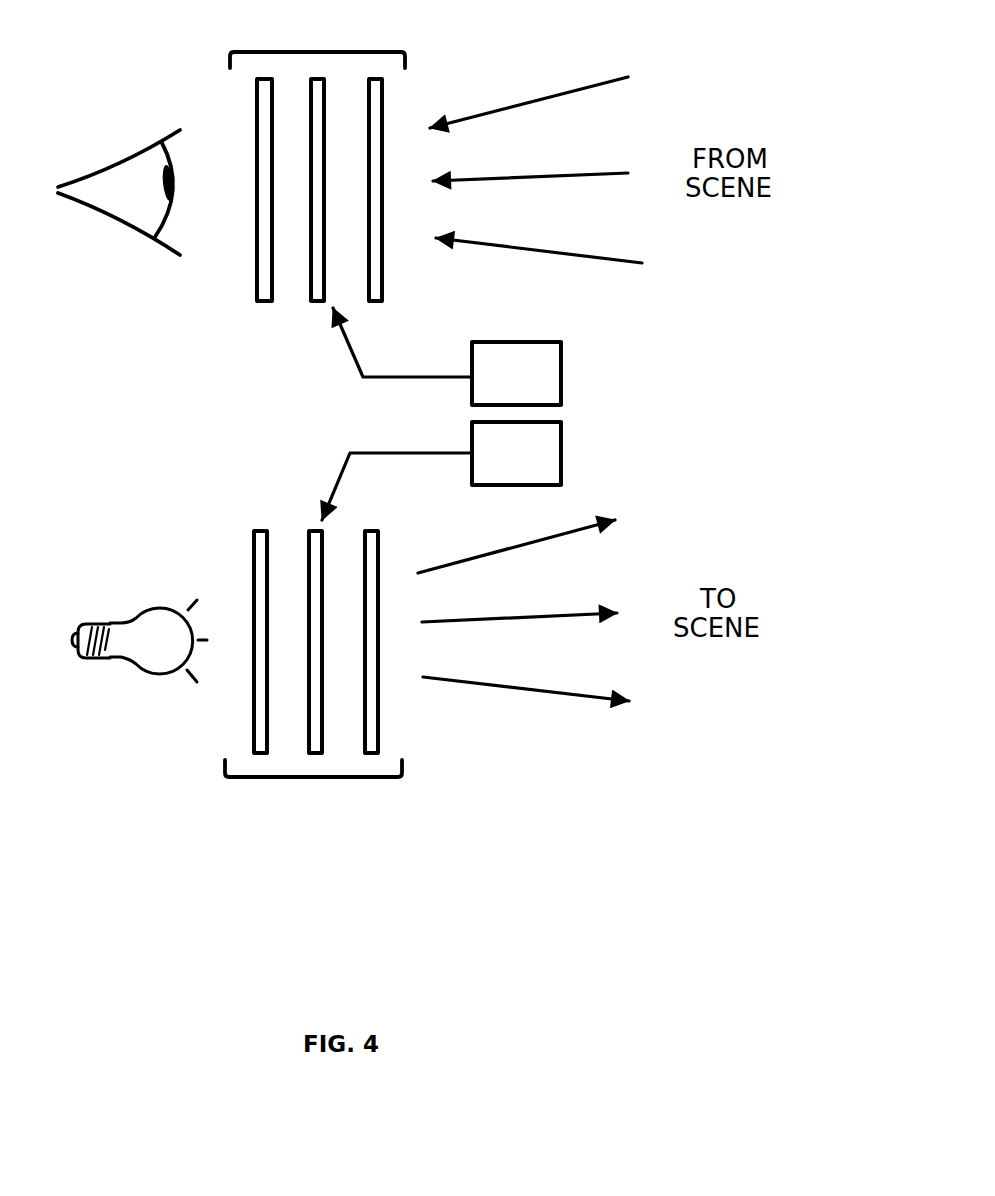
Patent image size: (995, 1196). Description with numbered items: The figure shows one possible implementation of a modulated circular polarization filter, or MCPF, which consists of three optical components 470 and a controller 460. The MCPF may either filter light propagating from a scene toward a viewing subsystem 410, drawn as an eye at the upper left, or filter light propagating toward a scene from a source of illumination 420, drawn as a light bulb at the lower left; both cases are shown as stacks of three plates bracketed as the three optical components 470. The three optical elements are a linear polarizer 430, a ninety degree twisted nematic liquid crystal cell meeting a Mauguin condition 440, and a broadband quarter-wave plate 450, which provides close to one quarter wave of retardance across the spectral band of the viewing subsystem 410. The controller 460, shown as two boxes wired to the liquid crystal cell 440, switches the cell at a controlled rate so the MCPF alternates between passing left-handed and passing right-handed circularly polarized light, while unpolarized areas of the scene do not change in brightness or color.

The viewing subsystem 410 is at (95, 228).
The source of illumination 420 is at (130, 596).
The linear polarizer 430 is at (265, 316).
The 90 degree twisted nematic (TN) liquid crystal cell 440 is at (310, 313).
The broadband quarter-wave plate 450 is at (380, 310).
The controller 460 is at (575, 364).
The three optical components 470 is at (318, 52).